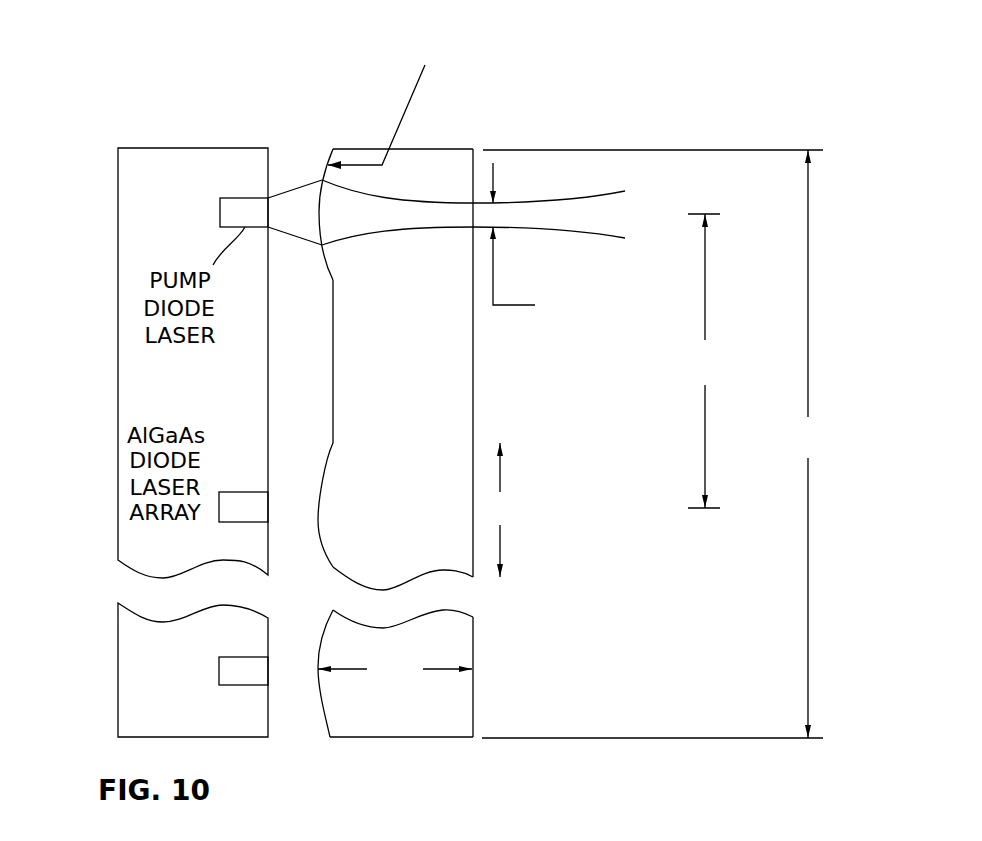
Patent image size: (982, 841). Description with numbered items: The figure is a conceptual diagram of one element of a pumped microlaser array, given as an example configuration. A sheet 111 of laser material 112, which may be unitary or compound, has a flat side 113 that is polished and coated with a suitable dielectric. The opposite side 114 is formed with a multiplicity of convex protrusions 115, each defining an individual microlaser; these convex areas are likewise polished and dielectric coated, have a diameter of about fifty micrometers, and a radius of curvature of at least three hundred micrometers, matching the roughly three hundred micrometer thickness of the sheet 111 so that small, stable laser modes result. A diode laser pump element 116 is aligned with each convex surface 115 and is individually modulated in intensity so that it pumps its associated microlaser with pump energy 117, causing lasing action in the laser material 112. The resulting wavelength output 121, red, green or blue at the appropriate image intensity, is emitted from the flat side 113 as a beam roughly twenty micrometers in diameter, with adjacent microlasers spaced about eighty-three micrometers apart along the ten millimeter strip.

The sheet 111 is at (435, 128).
The laser material 112 is at (457, 332).
The flat side 113 is at (473, 402).
The opposite side 114 is at (333, 365).
The convex protrusion 115 is at (318, 210).
The diode laser pump element 116 is at (221, 213).
The pump energy 117 is at (283, 190).
The wavelength output 121 is at (593, 193).